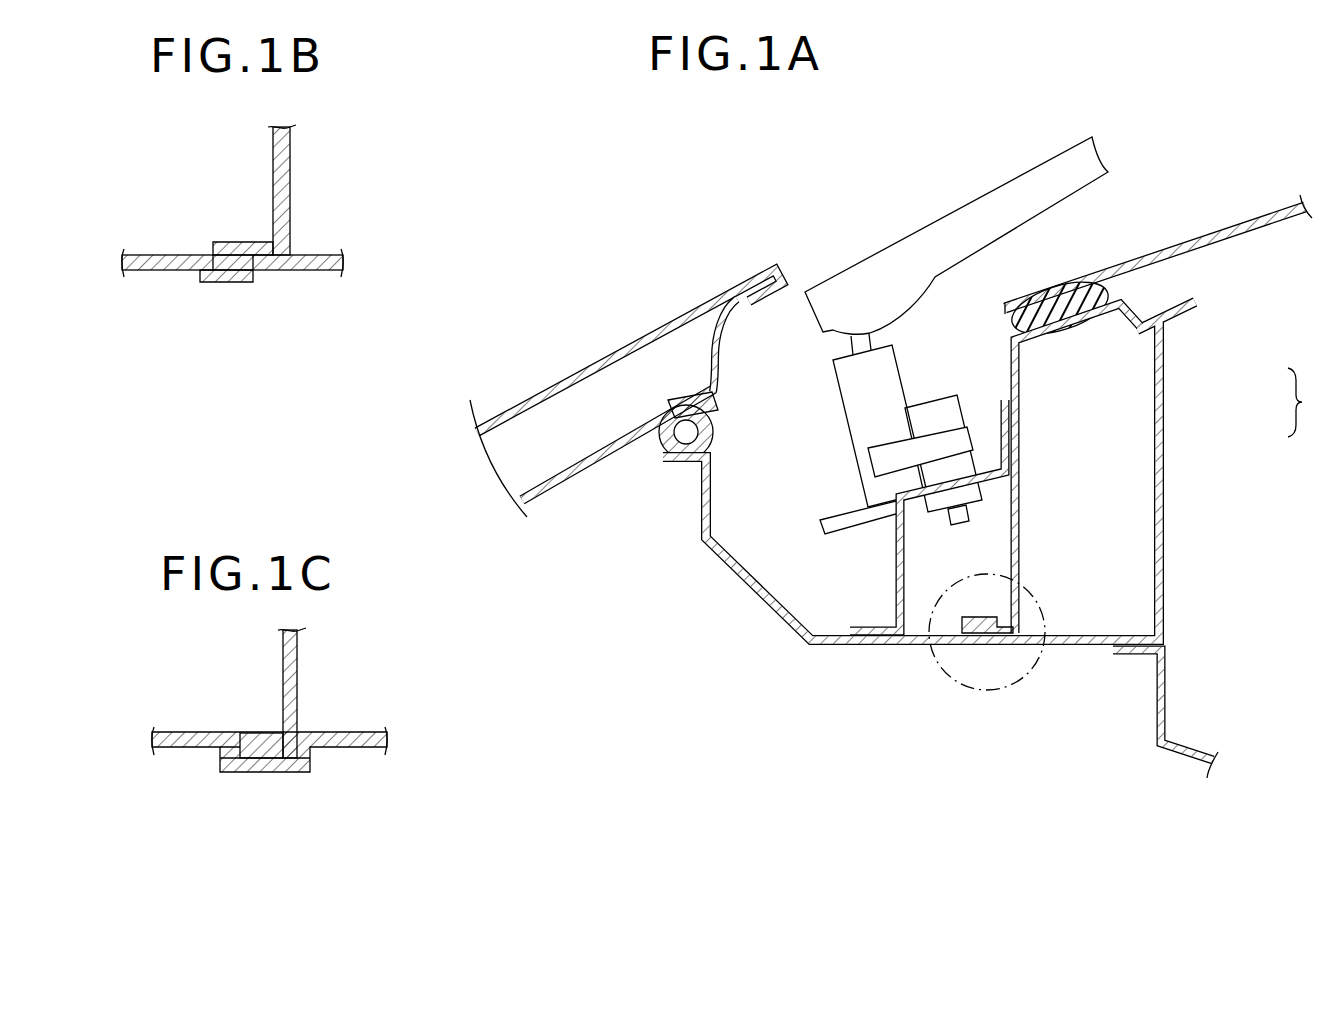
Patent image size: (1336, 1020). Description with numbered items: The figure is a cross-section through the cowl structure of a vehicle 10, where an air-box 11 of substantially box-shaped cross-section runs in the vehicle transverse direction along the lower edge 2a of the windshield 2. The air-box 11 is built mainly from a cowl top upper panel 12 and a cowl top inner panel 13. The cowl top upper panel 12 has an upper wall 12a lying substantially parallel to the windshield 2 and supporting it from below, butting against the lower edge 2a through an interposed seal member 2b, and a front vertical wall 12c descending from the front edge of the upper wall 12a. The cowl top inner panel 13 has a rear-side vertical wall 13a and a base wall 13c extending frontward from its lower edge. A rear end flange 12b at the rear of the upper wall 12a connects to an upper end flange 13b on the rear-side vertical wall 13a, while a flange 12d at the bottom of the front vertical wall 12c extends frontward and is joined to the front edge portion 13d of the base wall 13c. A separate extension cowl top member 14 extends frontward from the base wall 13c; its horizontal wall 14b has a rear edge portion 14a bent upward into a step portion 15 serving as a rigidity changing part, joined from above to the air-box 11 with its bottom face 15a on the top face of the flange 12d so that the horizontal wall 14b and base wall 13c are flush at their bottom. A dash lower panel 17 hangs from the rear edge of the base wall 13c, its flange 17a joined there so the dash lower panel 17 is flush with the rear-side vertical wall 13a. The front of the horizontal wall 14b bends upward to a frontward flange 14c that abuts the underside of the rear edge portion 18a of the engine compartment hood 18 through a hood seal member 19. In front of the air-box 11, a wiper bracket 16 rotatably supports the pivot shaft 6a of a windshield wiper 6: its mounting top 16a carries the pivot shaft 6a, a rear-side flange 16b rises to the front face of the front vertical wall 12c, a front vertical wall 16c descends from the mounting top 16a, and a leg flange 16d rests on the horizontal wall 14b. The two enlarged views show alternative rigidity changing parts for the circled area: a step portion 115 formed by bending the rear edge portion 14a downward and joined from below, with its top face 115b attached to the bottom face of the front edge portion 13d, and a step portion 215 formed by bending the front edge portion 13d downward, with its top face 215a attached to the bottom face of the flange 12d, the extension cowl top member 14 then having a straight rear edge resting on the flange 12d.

In FIG. 1A, the windshield 2 is at (1266, 207).
In FIG. 1A, the lower edge 2a is at (1012, 316).
In FIG. 1A, the seal member 2b is at (1100, 290).
In FIG. 1A, the windshield wiper 6 is at (985, 175).
In FIG. 1A, the pivot shaft 6a is at (923, 403).
In FIG. 1A, the vehicle 10 is at (622, 595).
In FIG. 1A, the air-box 11 is at (1312, 402).
In FIG. 1A, the cowl top upper panel 12 is at (1023, 378).
In FIG. 1A, the upper wall 12a is at (1118, 300).
In FIG. 1A, the rear end flange 12b is at (1138, 322).
In FIG. 1A, the front vertical wall 12c is at (1022, 530).
In FIG. 1B, the front vertical wall 12c is at (290, 200).
In FIG. 1C, the front vertical wall 12c is at (300, 702).
In FIG. 1A, the flange 12d is at (970, 650).
In FIG. 1C, the flange 12d is at (216, 758).
In FIG. 1A, the cowl top inner panel 13 is at (1170, 433).
In FIG. 1A, the rear-side vertical wall 13a is at (1166, 492).
In FIG. 1A, the upper end flange 13b is at (1183, 313).
In FIG. 1A, the base wall 13c is at (1070, 647).
In FIG. 1B, the base wall 13c is at (318, 272).
In FIG. 1C, the base wall 13c is at (348, 750).
In FIG. 1A, the front edge portion 13d is at (993, 650).
In FIG. 1C, the front edge portion 13d is at (267, 774).
In FIG. 1A, the extension cowl top member 14 is at (730, 572).
In FIG. 1A, the rear edge portion 14a is at (952, 660).
In FIG. 1A, the horizontal wall 14b is at (880, 650).
In FIG. 1A, the flange 14c is at (683, 463).
In FIG. 1A, the step portion 15 is at (980, 612).
In FIG. 1A, the bottom face 15a is at (1000, 647).
In FIG. 1B, the bottom face 15a is at (233, 284).
In FIG. 1A, the wiper bracket 16 is at (893, 555).
In FIG. 1A, the mounting top 16a is at (1000, 492).
In FIG. 1A, the rear-side flange 16b is at (1008, 442).
In FIG. 1A, the front vertical wall 16c is at (895, 568).
In FIG. 1A, the leg flange 16d is at (850, 620).
In FIG. 1A, the dash lower panel 17 is at (1170, 723).
In FIG. 1A, the flange 17a is at (1135, 657).
In FIG. 1A, the engine compartment hood 18 is at (540, 388).
In FIG. 1A, the rear edge portion 18a is at (727, 378).
In FIG. 1A, the hood seal member 19 is at (723, 437).
In FIG. 1B, the step portion 115 is at (198, 298).
In FIG. 1B, the top face 115b is at (237, 240).
In FIG. 1C, the step portion 215 is at (202, 802).
In FIG. 1C, the top face 215a is at (243, 730).